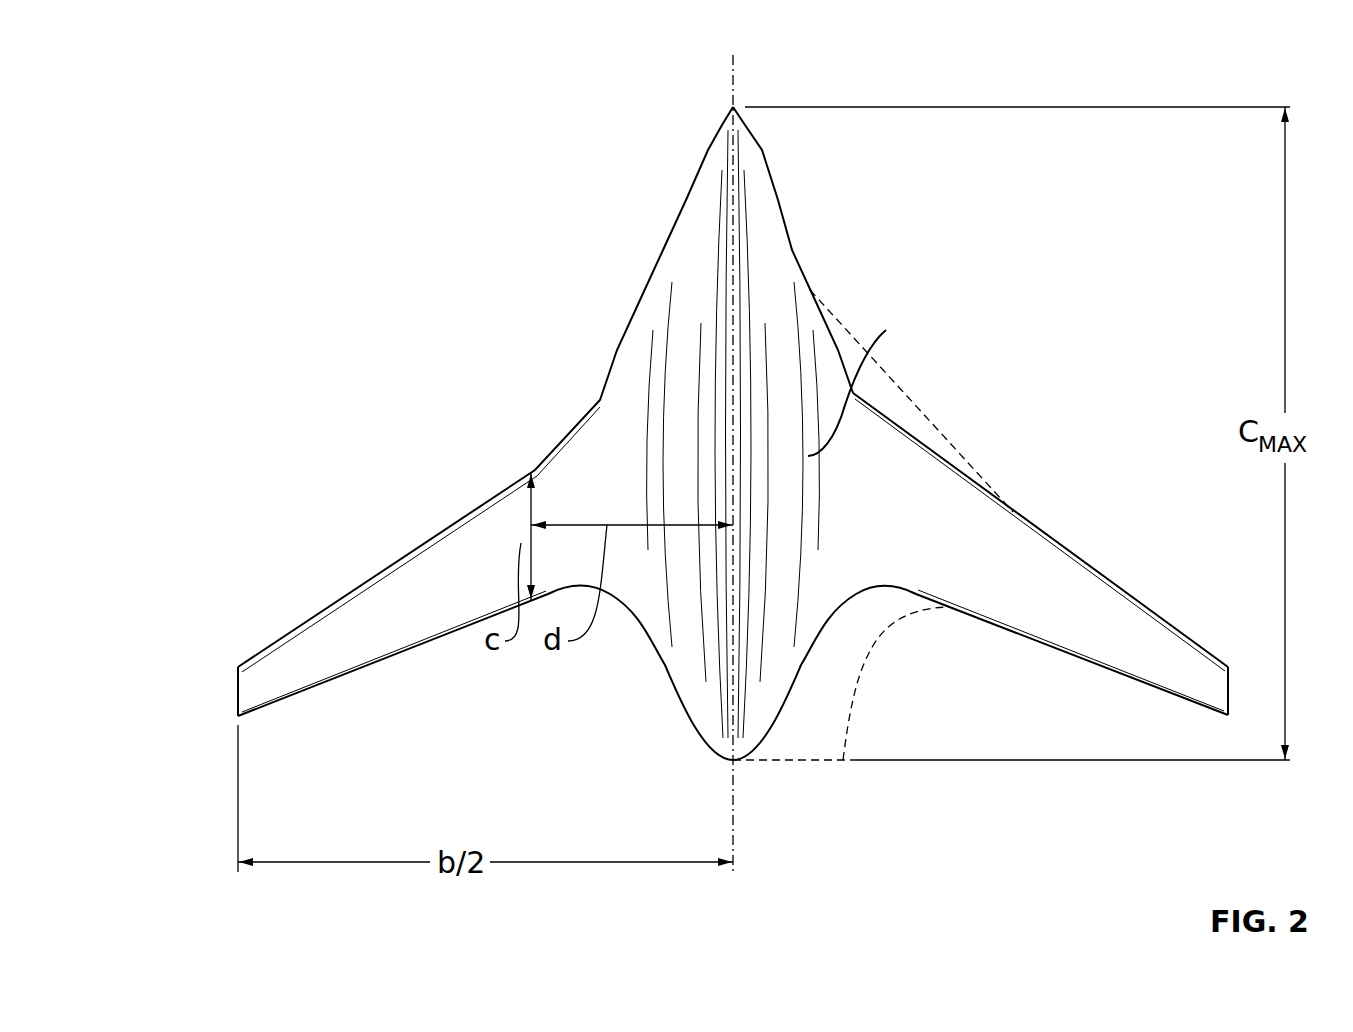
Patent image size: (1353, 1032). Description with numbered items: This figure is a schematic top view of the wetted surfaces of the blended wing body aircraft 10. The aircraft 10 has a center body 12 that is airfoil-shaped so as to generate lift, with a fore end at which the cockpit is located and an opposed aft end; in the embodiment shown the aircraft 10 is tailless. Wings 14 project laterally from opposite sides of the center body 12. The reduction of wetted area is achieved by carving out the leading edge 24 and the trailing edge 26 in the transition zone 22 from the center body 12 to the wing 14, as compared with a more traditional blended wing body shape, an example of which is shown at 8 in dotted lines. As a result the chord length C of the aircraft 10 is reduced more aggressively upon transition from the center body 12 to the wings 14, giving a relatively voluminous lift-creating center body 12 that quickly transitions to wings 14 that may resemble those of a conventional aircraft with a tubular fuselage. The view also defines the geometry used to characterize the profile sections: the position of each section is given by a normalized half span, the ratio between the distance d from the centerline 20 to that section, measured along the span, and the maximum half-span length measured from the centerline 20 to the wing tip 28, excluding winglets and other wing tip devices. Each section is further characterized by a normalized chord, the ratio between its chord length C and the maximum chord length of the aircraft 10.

The blended wing body aircraft 10 is at (486, 101).
The centerline 20 is at (737, 63).
The center body 12 is at (768, 172).
The traditional blended wing body shape 8 is at (826, 313).
The transition zone 22 is at (865, 375).
The leading edge 24 is at (915, 447).
The wing 14 is at (1057, 605).
The trailing edge 26 is at (1100, 672).
The wing tip 28 is at (237, 695).